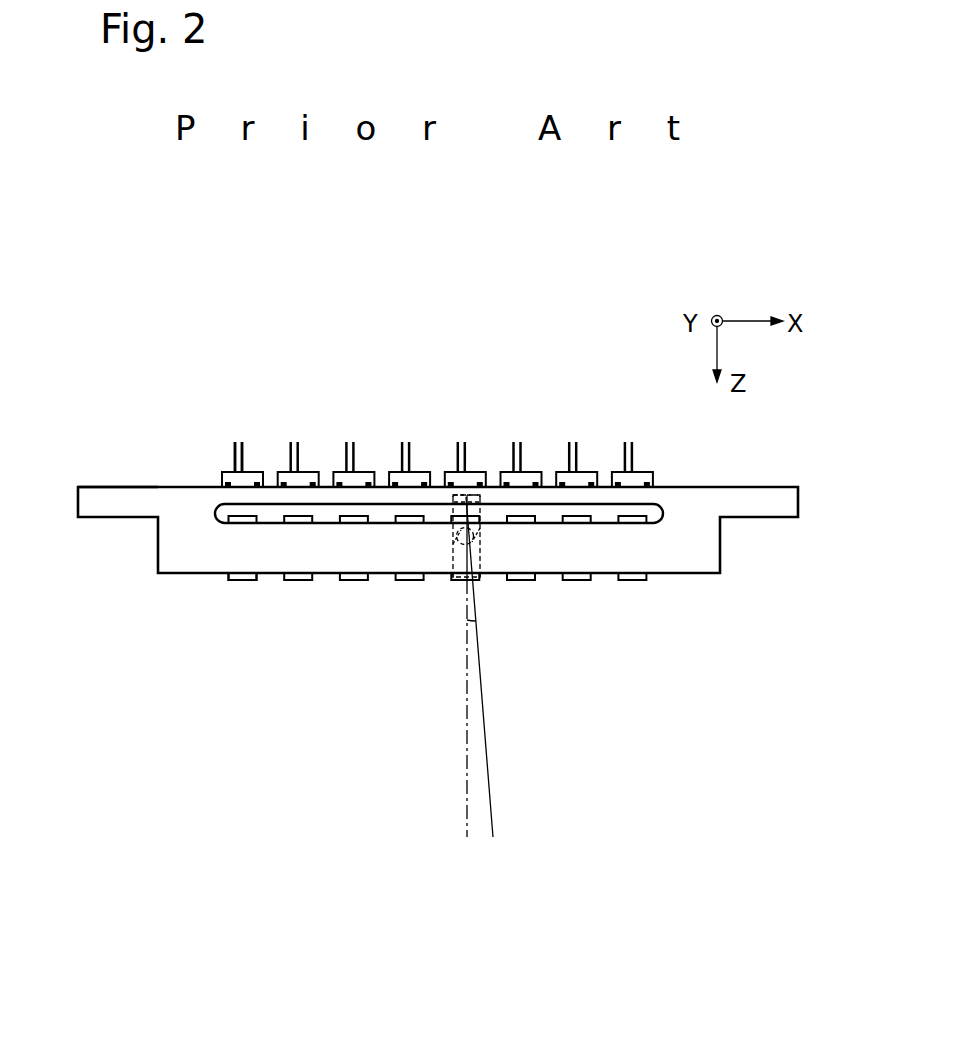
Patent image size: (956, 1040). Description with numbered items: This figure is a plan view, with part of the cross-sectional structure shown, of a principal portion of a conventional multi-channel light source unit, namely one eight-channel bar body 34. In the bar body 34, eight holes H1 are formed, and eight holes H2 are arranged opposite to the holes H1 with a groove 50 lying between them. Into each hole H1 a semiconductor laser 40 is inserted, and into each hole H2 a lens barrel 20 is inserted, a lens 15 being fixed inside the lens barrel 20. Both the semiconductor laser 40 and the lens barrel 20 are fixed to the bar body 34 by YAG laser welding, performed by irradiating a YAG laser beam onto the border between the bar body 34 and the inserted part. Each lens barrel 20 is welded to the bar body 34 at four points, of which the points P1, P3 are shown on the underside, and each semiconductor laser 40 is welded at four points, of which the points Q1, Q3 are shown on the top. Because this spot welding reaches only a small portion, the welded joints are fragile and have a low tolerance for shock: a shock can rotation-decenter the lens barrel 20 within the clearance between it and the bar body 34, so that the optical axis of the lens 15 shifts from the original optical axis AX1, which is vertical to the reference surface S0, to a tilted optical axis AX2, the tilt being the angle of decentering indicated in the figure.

The bar body 34 is at (688, 560).
The slot 50 is at (605, 516).
The semiconductor laser 40 is at (645, 470).
The welding point Q1 is at (254, 472).
The welding point Q3 is at (224, 472).
The reference surface S0 is at (172, 487).
The welding point P1 is at (250, 582).
The welding point P3 is at (233, 582).
The lens barrel 20 is at (452, 578).
The hole H1 is at (490, 488).
The hole H2 is at (483, 578).
The lens 15 is at (460, 537).
The optical axis AX1 is at (467, 773).
The optical axis AX2 is at (492, 773).